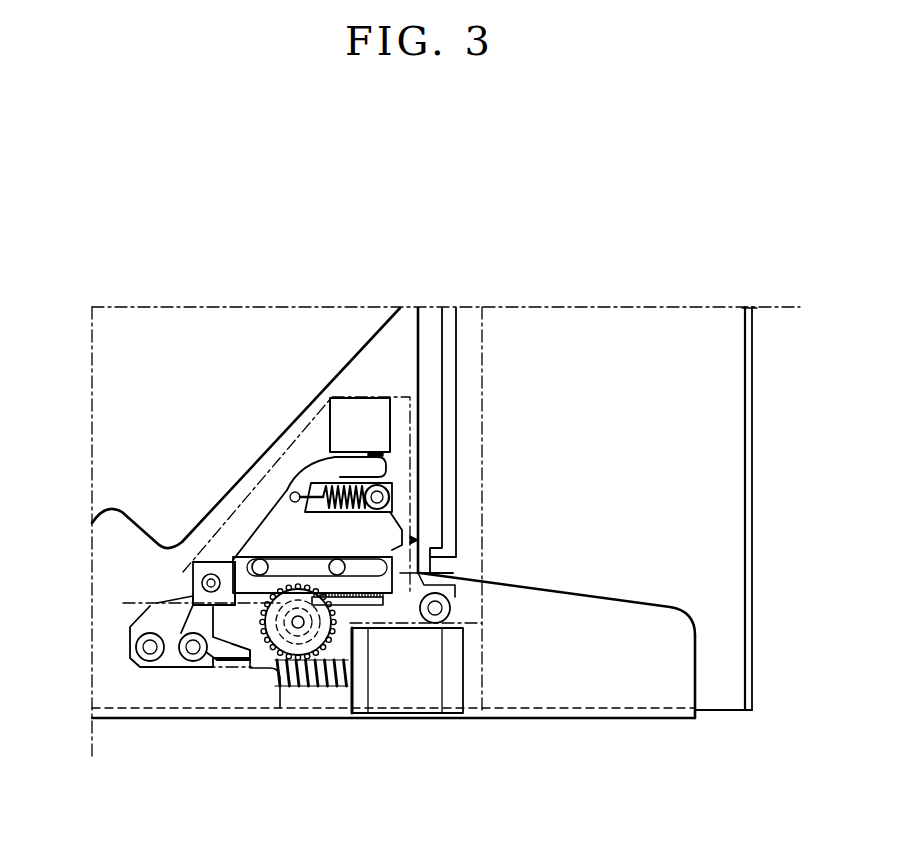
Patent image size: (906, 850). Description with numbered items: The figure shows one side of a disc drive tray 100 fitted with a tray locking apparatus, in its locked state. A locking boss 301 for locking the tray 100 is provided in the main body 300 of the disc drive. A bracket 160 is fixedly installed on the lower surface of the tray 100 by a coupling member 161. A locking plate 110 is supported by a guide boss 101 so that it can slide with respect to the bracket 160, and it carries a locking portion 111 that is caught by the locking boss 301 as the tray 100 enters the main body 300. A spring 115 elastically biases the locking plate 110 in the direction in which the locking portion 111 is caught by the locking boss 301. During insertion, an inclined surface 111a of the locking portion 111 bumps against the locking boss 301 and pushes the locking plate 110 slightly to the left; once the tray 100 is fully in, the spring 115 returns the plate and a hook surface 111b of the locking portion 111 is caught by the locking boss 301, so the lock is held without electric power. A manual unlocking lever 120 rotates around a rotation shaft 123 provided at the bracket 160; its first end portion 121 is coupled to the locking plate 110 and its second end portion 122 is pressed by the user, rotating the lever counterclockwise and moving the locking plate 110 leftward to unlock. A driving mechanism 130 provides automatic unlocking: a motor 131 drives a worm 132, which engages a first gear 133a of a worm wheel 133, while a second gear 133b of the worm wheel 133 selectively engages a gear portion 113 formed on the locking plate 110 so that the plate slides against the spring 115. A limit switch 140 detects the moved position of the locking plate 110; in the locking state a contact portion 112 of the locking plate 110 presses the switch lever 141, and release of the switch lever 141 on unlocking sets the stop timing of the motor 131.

The tray 100 is at (605, 700).
The main body 300 is at (725, 700).
The bracket 160 is at (385, 395).
The coupling member 161 is at (450, 608).
The guide boss 101 is at (337, 560).
The locking plate 110 is at (290, 488).
The locking portion 111 is at (443, 550).
The inclined surface 111a is at (400, 527).
The hook surface 111b is at (410, 540).
The contact portion 112 is at (383, 470).
The gear portion 113 is at (355, 606).
The spring 115 is at (327, 487).
The manual unlocking lever 120 is at (128, 779).
The first end portion 121 is at (150, 661).
The second end portion 122 is at (247, 665).
The rotation shaft 123 is at (193, 661).
The driving mechanism 130 is at (472, 652).
The motor 131 is at (420, 690).
The worm 132 is at (305, 688).
The worm wheel 133 is at (75, 538).
The first gear 133a is at (193, 572).
The second gear 133b is at (160, 604).
The limit switch 140 is at (388, 420).
The switch lever 141 is at (383, 453).
The locking boss 301 is at (412, 595).